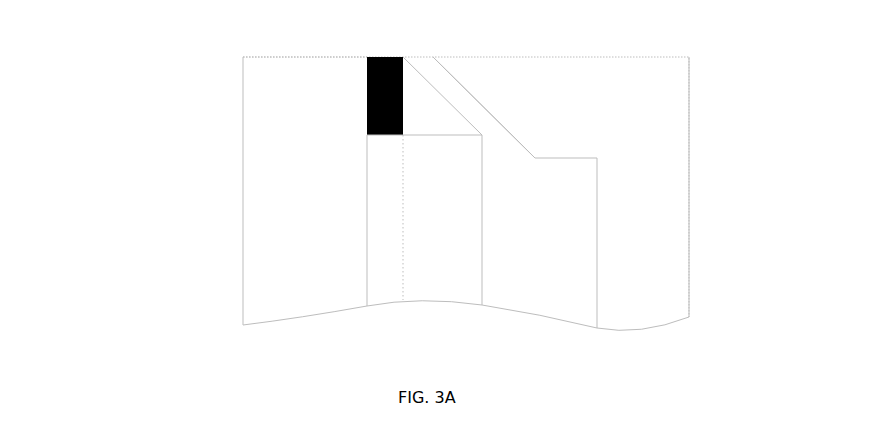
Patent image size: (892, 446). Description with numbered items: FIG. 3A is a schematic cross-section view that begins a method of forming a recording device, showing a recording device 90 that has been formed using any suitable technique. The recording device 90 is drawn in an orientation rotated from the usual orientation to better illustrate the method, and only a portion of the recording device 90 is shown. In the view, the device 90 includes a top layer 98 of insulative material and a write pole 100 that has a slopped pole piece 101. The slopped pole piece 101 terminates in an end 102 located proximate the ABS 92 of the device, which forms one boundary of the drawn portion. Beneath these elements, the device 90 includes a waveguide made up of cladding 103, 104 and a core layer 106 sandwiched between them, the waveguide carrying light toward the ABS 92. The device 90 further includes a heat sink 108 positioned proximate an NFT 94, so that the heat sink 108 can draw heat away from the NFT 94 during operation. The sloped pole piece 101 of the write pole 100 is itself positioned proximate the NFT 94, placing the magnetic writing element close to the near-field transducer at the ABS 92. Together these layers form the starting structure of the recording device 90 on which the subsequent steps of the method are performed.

The recording device 90 is at (150, 80).
The ABS 92 is at (630, 40).
The NFT 94 is at (367, 97).
The top layer 98 is at (689, 118).
The write pole 100 is at (597, 245).
The slopped pole piece 101 is at (492, 112).
The end 102 is at (420, 57).
The cladding 103 is at (482, 277).
The cladding 104 is at (275, 58).
The core layer 106 is at (367, 243).
The heat sink 108 is at (443, 93).